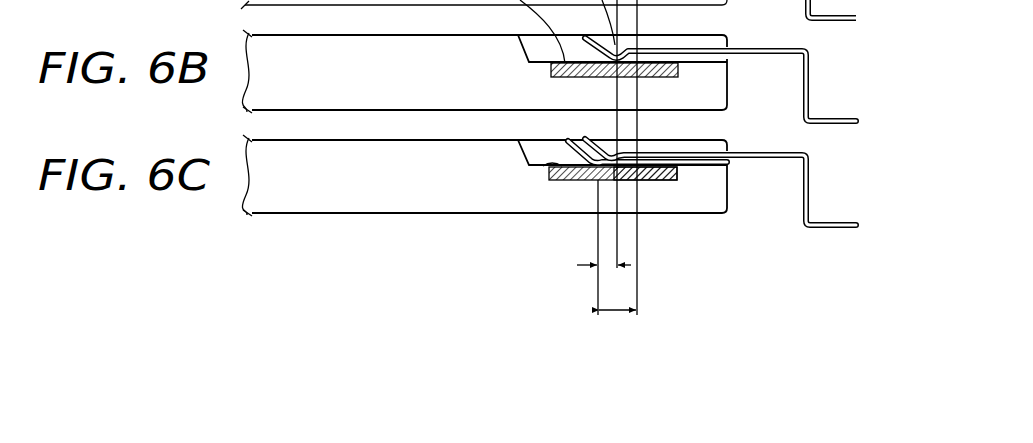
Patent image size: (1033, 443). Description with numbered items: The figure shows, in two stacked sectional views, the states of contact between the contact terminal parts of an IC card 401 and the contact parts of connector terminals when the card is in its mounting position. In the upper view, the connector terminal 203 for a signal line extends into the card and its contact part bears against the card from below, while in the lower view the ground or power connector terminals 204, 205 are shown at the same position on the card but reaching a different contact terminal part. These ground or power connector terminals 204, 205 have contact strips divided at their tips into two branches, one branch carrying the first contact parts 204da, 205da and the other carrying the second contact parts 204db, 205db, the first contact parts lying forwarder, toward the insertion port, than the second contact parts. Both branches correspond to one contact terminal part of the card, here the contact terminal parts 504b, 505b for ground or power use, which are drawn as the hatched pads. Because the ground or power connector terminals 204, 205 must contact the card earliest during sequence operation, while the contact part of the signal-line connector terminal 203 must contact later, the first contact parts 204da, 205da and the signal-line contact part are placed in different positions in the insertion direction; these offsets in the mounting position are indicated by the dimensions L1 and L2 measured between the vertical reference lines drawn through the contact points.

In FIG. 6B, the IC card 401 is at (266, 32).
In FIG. 6C, the IC card 401 is at (266, 137).
In FIG. 6B, the connector terminal for signal line 203 is at (814, 97).
In FIG. 6C, the ground or power connector terminal 204 is at (734, 182).
In FIG. 6C, the ground or power connector terminal 205 is at (813, 201).
In FIG. 6C, the first contact part 204da is at (538, 243).
In FIG. 6C, the first contact part 205da is at (570, 167).
In FIG. 6C, the second contact part 204db is at (727, 240).
In FIG. 6C, the second contact part 205db is at (660, 181).
In FIG. 6C, the contact terminal part for ground or power use 504b is at (431, 218).
In FIG. 6C, the contact terminal part for ground or power use 505b is at (543, 166).
In FIG. 6C, the insertion-direction position offset L1 is at (620, 312).
In FIG. 6C, the insertion-direction position offset L2 is at (597, 270).